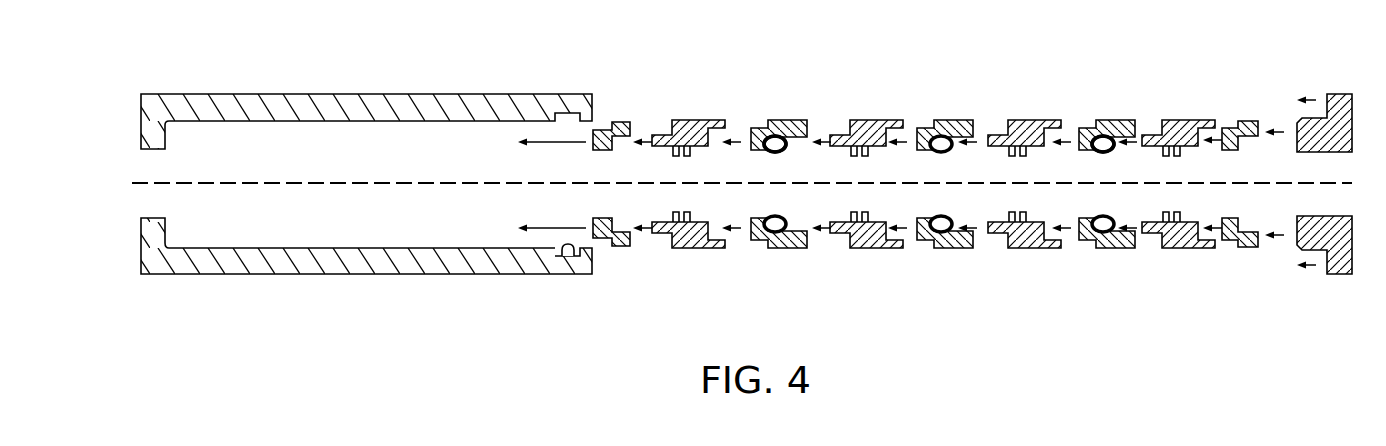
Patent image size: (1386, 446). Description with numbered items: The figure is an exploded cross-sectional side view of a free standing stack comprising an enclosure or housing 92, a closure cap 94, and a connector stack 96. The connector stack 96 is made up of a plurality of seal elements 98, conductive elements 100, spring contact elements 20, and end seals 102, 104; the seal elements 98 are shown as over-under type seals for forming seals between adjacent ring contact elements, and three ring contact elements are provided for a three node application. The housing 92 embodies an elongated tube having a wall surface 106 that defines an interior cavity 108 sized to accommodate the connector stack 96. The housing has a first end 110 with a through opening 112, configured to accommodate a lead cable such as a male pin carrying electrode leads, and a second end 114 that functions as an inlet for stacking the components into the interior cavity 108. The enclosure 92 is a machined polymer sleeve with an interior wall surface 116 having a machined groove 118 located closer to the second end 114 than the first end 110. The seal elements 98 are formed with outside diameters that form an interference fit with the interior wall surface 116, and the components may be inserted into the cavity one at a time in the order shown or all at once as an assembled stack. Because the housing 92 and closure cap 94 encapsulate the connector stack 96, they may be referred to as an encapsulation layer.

The spring contact element 20 is at (798, 143).
The housing 92 is at (331, 105).
The closure cap 94 is at (1340, 275).
The connector stack 96 is at (707, 266).
The seal element 98 is at (700, 120).
The conductive element 100 is at (786, 120).
The end seal 102 is at (622, 120).
The end seal 104 is at (1249, 120).
The wall surface 106 is at (477, 95).
The interior cavity 108 is at (388, 172).
The first end 110 is at (362, 259).
The through opening 112 is at (168, 164).
The second end 114 is at (593, 268).
The interior wall surface 116 is at (222, 247).
The machined groove 118 is at (566, 249).